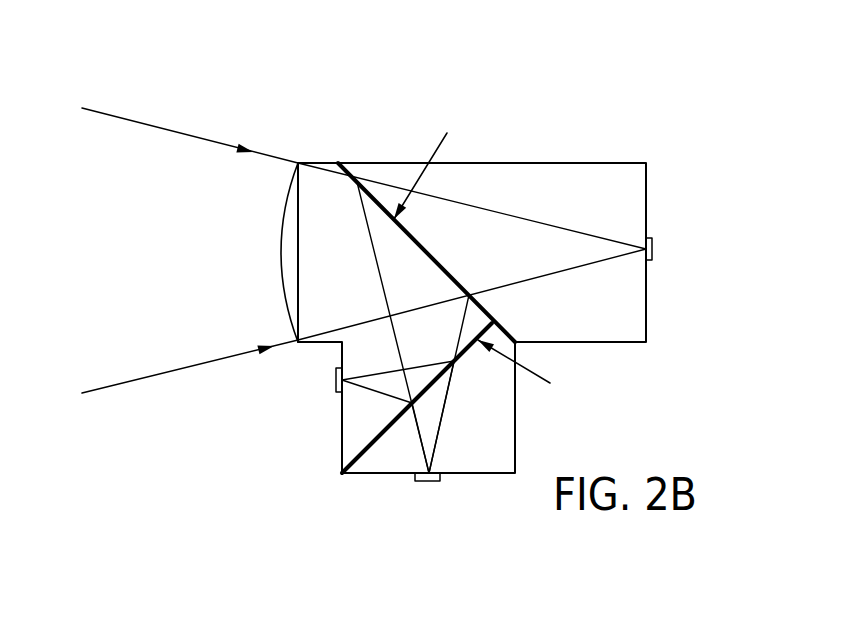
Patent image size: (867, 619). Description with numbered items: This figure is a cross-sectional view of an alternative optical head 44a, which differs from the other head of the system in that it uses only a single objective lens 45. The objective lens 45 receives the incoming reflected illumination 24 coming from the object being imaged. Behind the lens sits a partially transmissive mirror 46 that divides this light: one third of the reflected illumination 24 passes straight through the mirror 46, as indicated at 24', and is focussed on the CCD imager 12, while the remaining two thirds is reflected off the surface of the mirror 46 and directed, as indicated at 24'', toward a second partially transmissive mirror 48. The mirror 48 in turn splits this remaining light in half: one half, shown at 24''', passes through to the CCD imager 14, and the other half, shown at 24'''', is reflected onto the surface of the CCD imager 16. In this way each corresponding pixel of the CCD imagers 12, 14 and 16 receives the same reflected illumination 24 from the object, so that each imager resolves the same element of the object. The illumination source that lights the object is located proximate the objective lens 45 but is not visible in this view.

The alternative optical head 44a is at (590, 88).
The objective lens 45 is at (283, 204).
The partially transmissive mirror 46 is at (385, 205).
The partially transmissive mirror 48 is at (470, 350).
The reflected illumination 24 is at (190, 250).
The transmitted illumination 24' is at (472, 251).
The reflected illumination portion 24'' is at (462, 327).
The transmitted illumination half 24''' is at (454, 417).
The reflected illumination half 24'''' is at (364, 413).
The CCD imager 12 is at (654, 250).
The CCD imager 16 is at (336, 377).
The CCD imager 14 is at (425, 483).